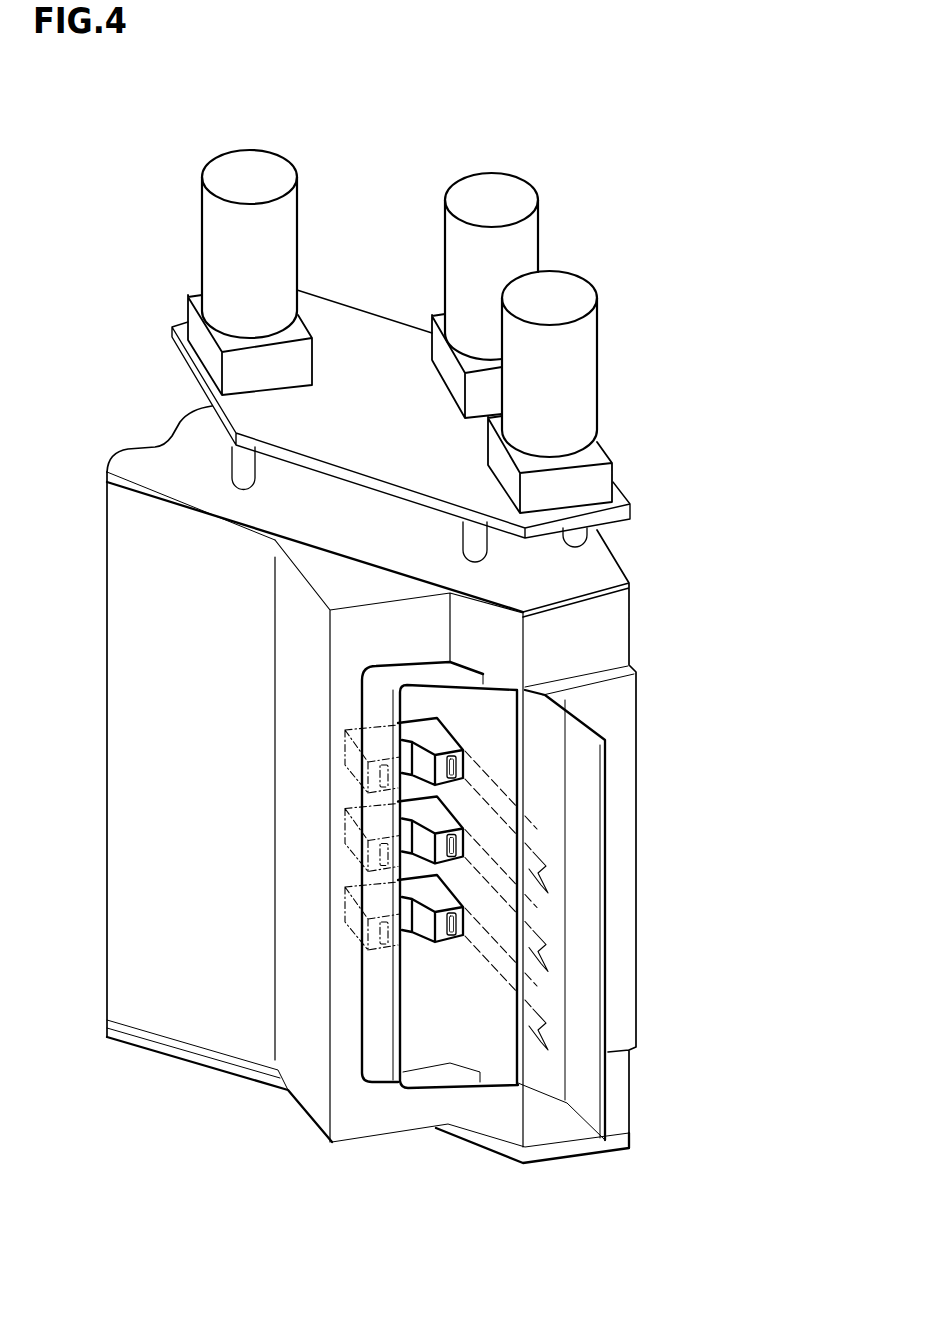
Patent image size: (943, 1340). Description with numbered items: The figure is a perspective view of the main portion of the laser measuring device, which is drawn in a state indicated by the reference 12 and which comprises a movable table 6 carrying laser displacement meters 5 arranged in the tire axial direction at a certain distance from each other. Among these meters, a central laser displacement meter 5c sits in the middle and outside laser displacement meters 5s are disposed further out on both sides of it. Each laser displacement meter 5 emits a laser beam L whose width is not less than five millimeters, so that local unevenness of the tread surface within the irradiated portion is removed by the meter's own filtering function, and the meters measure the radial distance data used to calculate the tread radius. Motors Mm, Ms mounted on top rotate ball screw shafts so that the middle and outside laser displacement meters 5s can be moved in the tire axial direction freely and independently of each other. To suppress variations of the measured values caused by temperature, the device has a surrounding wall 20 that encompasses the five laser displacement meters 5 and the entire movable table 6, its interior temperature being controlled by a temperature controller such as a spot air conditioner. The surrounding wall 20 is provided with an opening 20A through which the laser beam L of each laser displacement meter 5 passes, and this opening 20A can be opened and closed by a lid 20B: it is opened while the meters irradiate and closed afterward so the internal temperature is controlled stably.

The motor Mm is at (288, 225).
The motor Ms is at (530, 233).
The motor unit (power unit) 12 is at (672, 589).
The movable table 6 is at (456, 685).
The laser displacement meter 5 is at (575, 791).
The outside laser displacement meter 5s is at (452, 735).
The central laser displacement meter 5c is at (452, 813).
The laser beam L is at (541, 862).
The surrounding wall 20 is at (302, 1020).
The opening 20A is at (400, 1008).
The lid 20B is at (580, 1120).